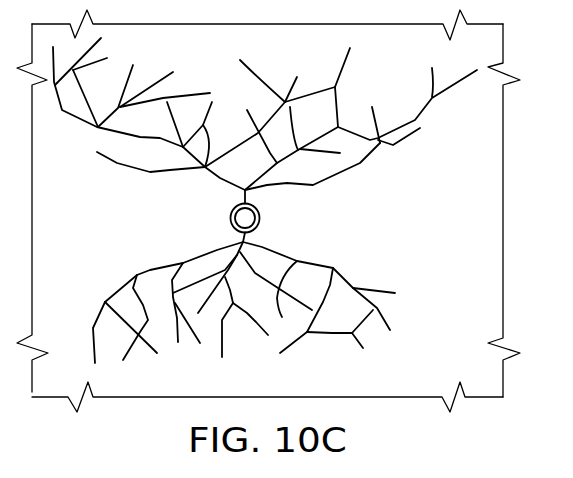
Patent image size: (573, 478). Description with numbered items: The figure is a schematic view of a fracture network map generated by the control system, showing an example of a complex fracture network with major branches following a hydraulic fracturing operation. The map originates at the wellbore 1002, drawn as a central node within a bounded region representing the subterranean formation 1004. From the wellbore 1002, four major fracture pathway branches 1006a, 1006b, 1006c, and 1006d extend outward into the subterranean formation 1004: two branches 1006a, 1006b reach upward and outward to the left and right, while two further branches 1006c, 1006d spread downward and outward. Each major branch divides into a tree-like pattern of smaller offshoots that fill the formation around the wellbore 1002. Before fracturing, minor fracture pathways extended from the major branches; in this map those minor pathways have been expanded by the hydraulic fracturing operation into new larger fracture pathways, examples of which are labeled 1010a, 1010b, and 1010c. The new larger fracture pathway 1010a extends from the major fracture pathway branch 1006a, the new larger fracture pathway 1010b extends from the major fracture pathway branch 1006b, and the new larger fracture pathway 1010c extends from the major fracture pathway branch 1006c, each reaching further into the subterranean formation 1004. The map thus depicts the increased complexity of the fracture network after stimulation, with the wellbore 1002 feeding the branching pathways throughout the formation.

The wellbore 1002 is at (230, 218).
The subterranean formation 1004 is at (321, 61).
The major fracture pathway branch 1006a is at (149, 125).
The major fracture pathway branch 1006b is at (341, 128).
The major fracture pathway branch 1006c is at (120, 280).
The major fracture pathway branch 1006d is at (300, 304).
The new larger fracture pathway 1010a is at (134, 65).
The new larger fracture pathway 1010b is at (377, 115).
The new larger fracture pathway 1010c is at (227, 331).